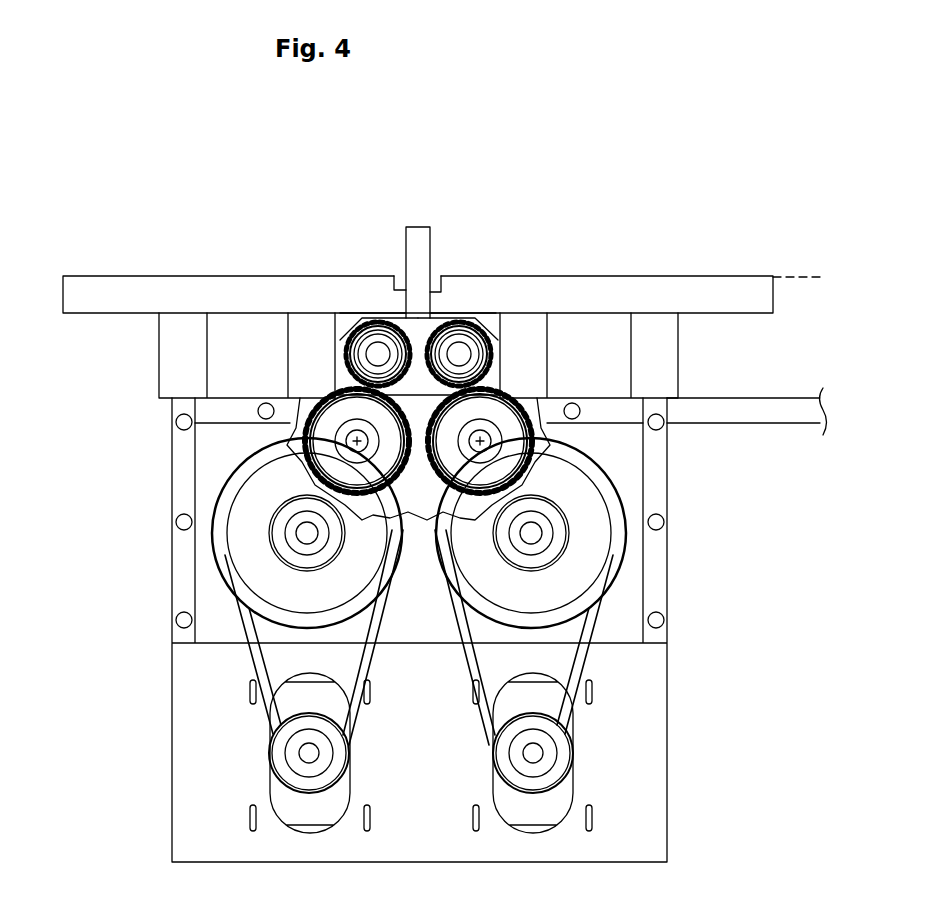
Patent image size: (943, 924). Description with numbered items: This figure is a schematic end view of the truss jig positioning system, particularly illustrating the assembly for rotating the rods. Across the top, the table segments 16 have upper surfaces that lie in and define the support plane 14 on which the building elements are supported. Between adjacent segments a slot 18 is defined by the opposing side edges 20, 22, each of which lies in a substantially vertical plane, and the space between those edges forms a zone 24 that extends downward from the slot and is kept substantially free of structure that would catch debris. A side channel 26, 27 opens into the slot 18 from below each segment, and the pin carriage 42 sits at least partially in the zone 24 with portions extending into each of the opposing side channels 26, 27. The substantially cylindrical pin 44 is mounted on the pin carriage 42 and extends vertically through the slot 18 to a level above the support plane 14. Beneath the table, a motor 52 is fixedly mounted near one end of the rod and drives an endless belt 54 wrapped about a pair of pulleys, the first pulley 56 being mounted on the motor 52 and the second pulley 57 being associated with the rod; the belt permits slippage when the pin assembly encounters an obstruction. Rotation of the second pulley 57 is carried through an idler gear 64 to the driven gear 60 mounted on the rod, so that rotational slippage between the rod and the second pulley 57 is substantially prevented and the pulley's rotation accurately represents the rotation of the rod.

The support plane 14 is at (808, 277).
The segment 16 is at (228, 292).
The slot 18 is at (442, 257).
The side edge 20 is at (392, 288).
The side edge 22 is at (440, 292).
The zone 24 is at (397, 262).
The side channel 26 is at (343, 323).
The side channel 27 is at (494, 322).
The pin carriage 42 is at (490, 313).
The pin 44 is at (417, 240).
The motor 52 is at (295, 805).
The endless belt 54 is at (252, 660).
The first pulley 56 is at (295, 762).
The second pulley 57 is at (262, 573).
The driven gear 60 is at (361, 355).
The idler gear 64 is at (328, 427).